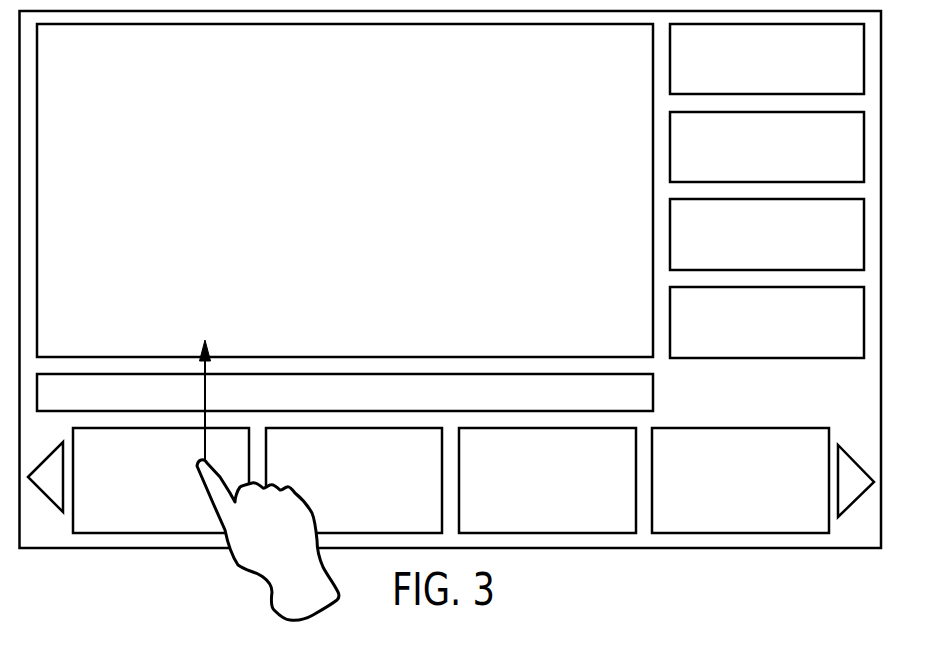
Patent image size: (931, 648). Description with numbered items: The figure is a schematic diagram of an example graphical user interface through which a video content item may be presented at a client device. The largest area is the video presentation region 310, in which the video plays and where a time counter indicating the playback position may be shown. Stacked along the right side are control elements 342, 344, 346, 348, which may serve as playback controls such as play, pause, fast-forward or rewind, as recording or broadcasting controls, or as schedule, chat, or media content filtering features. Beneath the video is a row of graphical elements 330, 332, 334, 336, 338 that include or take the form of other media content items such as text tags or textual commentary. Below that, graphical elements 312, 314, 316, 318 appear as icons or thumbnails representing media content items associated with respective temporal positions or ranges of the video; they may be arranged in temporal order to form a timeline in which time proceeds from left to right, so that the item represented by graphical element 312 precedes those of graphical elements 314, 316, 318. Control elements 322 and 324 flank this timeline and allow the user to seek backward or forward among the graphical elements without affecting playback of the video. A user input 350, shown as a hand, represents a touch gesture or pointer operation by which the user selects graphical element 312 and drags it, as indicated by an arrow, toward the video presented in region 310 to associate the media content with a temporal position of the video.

The video presentation region 310 is at (359, 202).
The graphical element 312 is at (176, 518).
The graphical element 314 is at (368, 518).
The graphical element 316 is at (562, 518).
The graphical element 318 is at (755, 518).
The control element 322 is at (61, 542).
The control element 324 is at (870, 543).
The graphical element 330 is at (88, 407).
The graphical element 332 is at (174, 407).
The graphical element 334 is at (262, 407).
The graphical element 336 is at (352, 407).
The graphical element 338 is at (438, 407).
The control element 342 is at (782, 73).
The control element 344 is at (782, 161).
The control element 346 is at (782, 248).
The control element 348 is at (782, 335).
The user input 350 is at (283, 540).